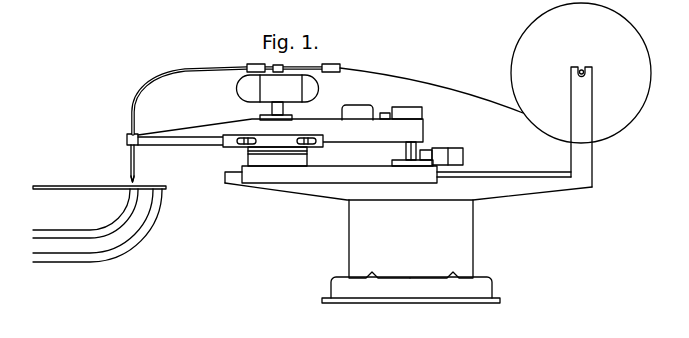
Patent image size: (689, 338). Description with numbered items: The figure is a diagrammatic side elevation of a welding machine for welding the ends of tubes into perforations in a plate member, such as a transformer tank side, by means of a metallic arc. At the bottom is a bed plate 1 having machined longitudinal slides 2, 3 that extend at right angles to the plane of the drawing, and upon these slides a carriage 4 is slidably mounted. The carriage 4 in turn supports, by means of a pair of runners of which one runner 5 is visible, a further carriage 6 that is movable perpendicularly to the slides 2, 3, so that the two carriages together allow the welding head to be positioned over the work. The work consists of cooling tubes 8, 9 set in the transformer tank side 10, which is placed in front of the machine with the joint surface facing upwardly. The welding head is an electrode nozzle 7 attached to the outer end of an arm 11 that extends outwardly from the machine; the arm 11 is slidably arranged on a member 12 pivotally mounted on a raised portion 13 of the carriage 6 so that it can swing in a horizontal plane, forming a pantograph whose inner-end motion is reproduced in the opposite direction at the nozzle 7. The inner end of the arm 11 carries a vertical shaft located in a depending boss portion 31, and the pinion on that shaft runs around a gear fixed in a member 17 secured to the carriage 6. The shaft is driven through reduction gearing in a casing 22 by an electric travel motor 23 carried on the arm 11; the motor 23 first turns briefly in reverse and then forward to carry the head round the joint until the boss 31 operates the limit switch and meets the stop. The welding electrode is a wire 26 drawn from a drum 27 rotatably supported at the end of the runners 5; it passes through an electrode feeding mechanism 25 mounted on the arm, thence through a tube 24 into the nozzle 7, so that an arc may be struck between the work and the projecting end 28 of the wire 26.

The bed plate 1 is at (414, 297).
The longitudinal slide 2 is at (372, 279).
The longitudinal slide 3 is at (454, 279).
The carriage 4 is at (474, 222).
The runner 5 is at (336, 192).
The further carriage 6 is at (262, 175).
The electrode nozzle 7 is at (130, 158).
The cooling tube 8 is at (108, 228).
The cooling tube 9 is at (152, 219).
The transformer tank side 10 is at (58, 186).
The arm 11 is at (186, 129).
The member 12 is at (247, 149).
The raised portion 13 is at (306, 158).
The member 17 is at (424, 164).
The casing 22 is at (420, 112).
The electric motor 23 is at (355, 106).
The tube 24 is at (180, 72).
The electrode feeding mechanism 25 is at (262, 95).
The wire 26 is at (391, 78).
The drum 27 is at (626, 121).
The projecting end 28 is at (136, 178).
The depending boss portion 31 is at (405, 151).